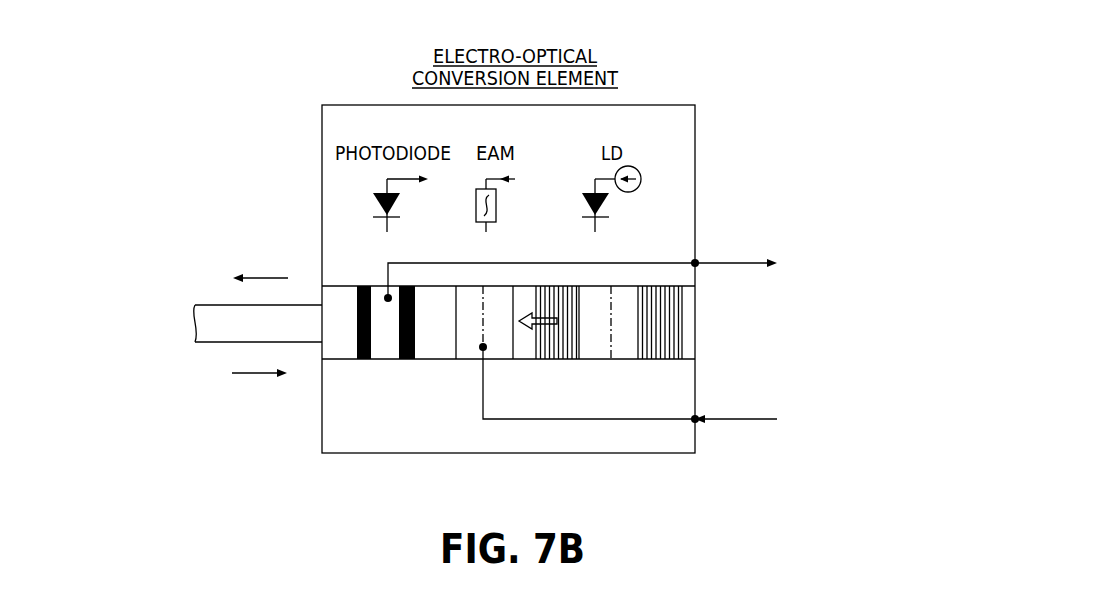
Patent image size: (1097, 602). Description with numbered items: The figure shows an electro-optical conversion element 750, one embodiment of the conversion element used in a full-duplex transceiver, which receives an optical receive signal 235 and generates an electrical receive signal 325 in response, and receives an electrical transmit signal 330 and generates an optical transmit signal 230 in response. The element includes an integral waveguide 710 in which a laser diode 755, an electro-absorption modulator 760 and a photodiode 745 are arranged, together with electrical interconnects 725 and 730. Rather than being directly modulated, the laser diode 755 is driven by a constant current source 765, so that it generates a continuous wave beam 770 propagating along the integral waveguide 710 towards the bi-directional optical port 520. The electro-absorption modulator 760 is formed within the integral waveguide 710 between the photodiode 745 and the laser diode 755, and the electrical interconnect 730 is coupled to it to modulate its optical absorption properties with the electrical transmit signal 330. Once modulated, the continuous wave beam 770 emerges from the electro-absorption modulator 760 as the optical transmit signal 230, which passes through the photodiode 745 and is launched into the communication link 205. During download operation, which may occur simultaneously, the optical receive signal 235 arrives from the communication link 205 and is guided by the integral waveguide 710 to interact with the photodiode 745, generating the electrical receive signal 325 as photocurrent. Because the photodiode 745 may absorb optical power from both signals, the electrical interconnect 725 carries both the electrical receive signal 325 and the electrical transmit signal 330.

The electro-optical conversion element 750 is at (754, 78).
The constant current source 765 is at (631, 166).
The continuous wave beam 770 is at (523, 313).
The electrical interconnect 725 is at (649, 263).
The electrical receive signal 325 is at (731, 249).
The electrical transmit signal 330 is at (731, 283).
The bi-directional optical port 520 is at (322, 296).
The optical transmit signal 230 is at (235, 272).
The communication link 205 is at (205, 327).
The optical receive signal 235 is at (233, 375).
The integral waveguide 710 is at (333, 349).
The photodiode 745 is at (387, 353).
The electro-absorption modulator 760 is at (467, 353).
The laser diode 755 is at (593, 352).
The electrical interconnect 730 is at (660, 420).